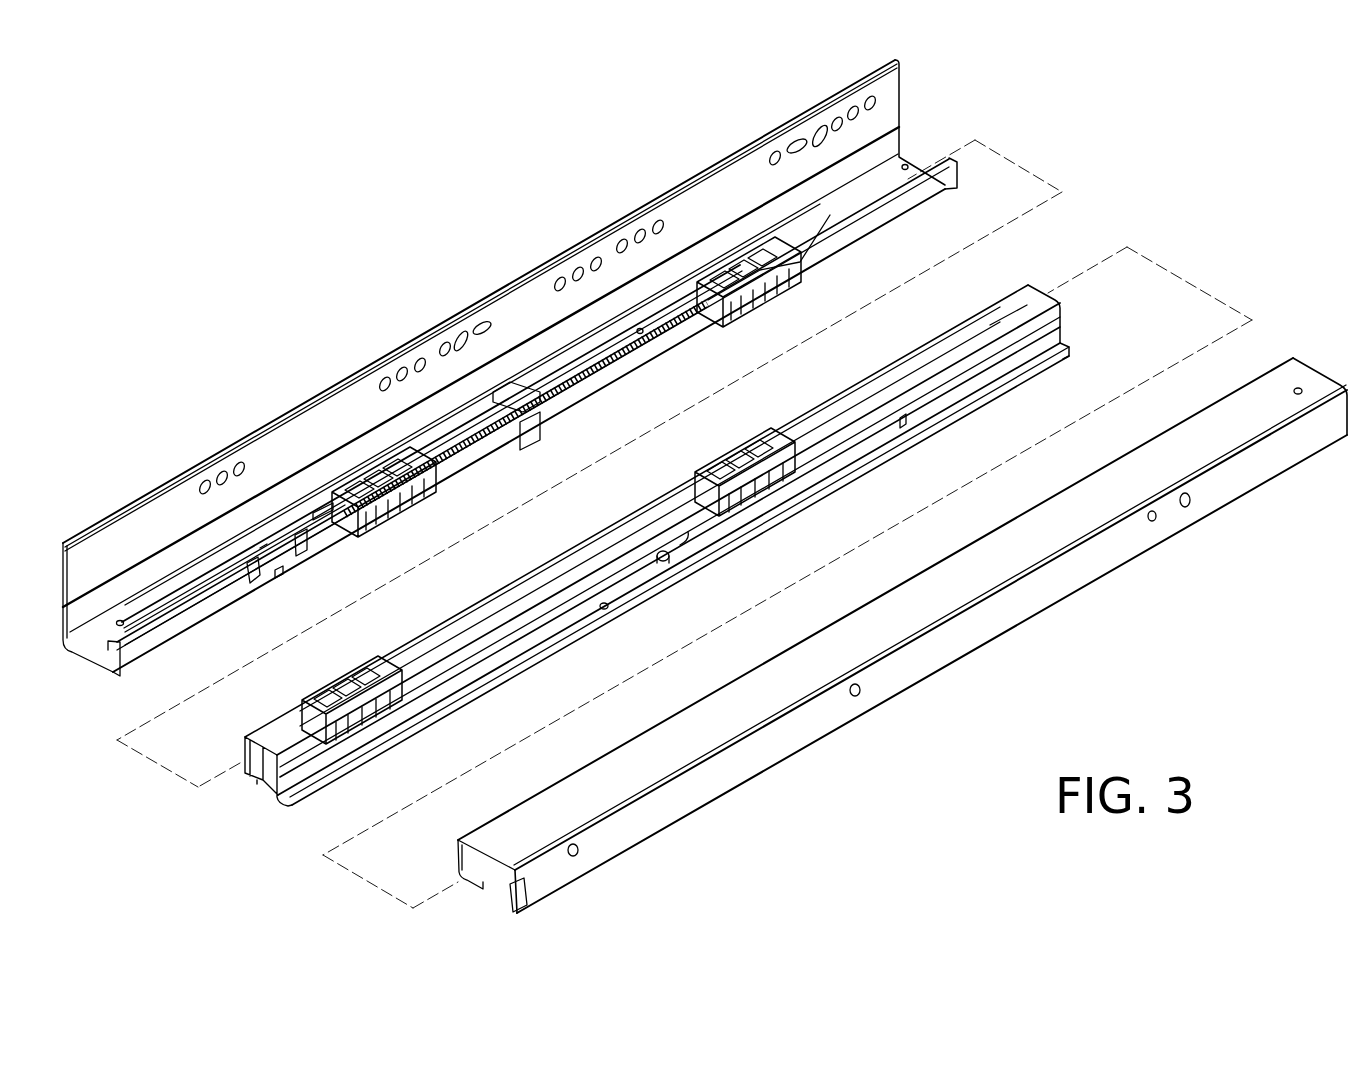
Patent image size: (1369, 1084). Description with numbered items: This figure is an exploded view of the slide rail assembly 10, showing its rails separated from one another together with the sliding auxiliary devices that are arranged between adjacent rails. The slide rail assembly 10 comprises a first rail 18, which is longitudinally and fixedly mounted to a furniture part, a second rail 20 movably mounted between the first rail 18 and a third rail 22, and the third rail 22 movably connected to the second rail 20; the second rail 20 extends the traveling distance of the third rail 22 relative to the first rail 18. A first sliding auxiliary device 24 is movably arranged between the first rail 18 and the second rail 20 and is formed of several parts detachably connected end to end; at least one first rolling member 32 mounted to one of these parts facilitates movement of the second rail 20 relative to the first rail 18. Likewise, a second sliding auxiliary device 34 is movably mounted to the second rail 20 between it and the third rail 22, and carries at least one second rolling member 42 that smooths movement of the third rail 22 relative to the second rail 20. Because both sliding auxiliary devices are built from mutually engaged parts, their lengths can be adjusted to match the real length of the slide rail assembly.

The slide rail assembly 10 is at (412, 252).
The first rail 18 is at (211, 578).
The second rail 20 is at (283, 722).
The third rail 22 is at (762, 697).
The first sliding auxiliary device 24 is at (446, 418).
The first rolling member 32 is at (372, 468).
The second sliding auxiliary device 34 is at (583, 530).
The second rolling member 42 is at (353, 661).